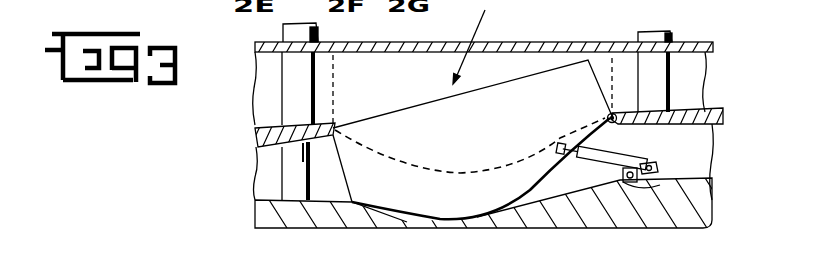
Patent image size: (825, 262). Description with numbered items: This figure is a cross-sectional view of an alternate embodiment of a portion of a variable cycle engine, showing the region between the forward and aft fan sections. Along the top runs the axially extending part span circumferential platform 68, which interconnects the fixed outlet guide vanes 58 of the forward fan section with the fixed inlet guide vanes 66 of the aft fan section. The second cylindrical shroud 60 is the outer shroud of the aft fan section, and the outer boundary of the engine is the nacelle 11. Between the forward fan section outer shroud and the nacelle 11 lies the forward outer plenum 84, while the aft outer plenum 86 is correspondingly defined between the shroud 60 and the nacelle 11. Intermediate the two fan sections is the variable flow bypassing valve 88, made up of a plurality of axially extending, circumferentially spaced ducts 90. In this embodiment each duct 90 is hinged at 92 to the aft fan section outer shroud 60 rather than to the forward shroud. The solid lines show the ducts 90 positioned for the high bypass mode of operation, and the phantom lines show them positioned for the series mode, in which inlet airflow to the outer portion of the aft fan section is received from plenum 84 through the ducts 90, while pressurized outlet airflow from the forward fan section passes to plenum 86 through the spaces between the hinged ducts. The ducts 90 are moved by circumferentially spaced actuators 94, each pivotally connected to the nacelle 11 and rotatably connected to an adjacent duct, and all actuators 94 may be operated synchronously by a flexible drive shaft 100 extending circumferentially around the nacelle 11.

The nacelle 11 is at (703, 226).
The fixed outlet guide vanes 58 is at (286, 80).
The second cylindrical shroud 60 is at (676, 126).
The fixed inlet guide vanes 66 is at (662, 84).
The axially extending part span circumferential platform 68 is at (549, 45).
The forward outer plenum 84 is at (265, 167).
The aft outer plenum 86 is at (690, 160).
The variable flow bypassing valve 88 is at (479, 42).
The ducts 90 is at (428, 96).
The hinge 92 is at (607, 114).
The actuators 94 is at (610, 162).
The flexible drive shaft 100 is at (672, 180).